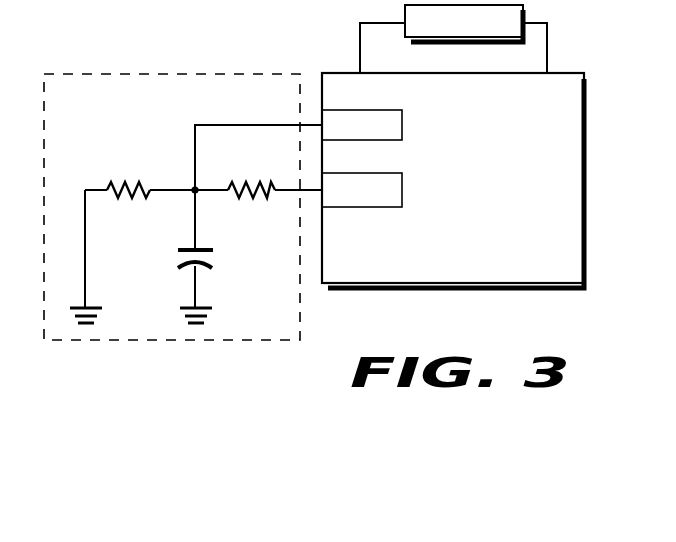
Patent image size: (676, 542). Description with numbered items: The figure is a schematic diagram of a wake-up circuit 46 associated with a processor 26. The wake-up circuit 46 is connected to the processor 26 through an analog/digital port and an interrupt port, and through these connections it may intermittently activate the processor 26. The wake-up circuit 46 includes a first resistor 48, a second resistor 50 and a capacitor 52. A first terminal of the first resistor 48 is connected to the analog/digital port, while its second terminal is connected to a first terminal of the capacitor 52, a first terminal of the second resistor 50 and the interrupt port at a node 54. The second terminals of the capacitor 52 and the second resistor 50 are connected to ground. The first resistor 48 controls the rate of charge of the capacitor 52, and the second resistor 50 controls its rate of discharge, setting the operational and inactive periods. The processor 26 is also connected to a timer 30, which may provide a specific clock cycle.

The processor 26 is at (453, 180).
The timer 30 is at (453, 39).
The wake-up circuit 46 is at (143, 74).
The first resistor 48 is at (255, 181).
The second resistor 50 is at (133, 181).
The capacitor 52 is at (212, 260).
The node 54 is at (199, 188).